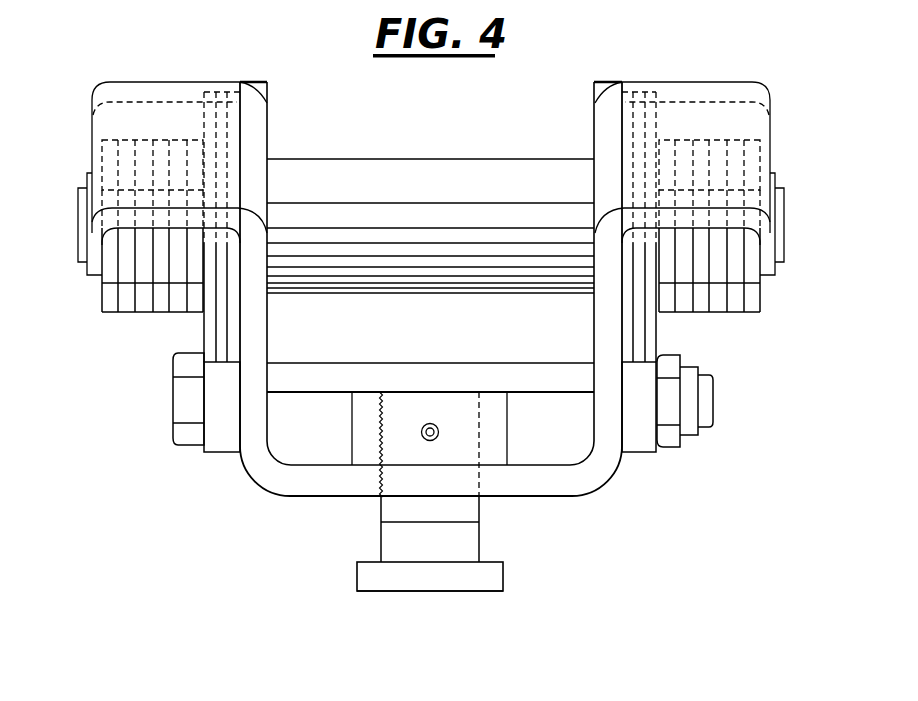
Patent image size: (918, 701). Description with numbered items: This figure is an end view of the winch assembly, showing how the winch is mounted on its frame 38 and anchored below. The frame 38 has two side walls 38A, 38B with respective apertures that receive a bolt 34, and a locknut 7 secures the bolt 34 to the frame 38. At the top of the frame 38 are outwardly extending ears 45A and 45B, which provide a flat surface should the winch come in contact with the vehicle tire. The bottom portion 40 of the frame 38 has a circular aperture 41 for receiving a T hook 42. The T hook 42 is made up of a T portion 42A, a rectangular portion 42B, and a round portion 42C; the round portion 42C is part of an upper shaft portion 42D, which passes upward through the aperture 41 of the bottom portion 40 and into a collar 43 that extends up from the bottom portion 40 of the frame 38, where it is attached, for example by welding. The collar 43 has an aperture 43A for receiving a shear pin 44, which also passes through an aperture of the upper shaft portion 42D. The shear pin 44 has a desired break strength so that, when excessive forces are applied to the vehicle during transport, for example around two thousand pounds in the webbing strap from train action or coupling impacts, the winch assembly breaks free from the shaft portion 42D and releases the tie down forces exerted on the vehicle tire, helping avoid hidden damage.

The locknut 7 is at (667, 402).
The bolt 34 is at (171, 400).
The frame 38 is at (248, 327).
The side wall 38A is at (603, 387).
The side wall 38B is at (251, 424).
The bottom portion 40 is at (542, 482).
The circular aperture 41 is at (375, 483).
The T hook 42 is at (432, 593).
The T portion 42A is at (377, 578).
The rectangular portion 42B is at (467, 543).
The round portion 42C is at (393, 508).
The upper shaft portion 42D is at (378, 433).
The collar 43 is at (508, 445).
The aperture 43A is at (427, 422).
The shear pin 44 is at (432, 442).
The outwardly extending ear 45A is at (138, 119).
The outwardly extending ear 45B is at (712, 120).